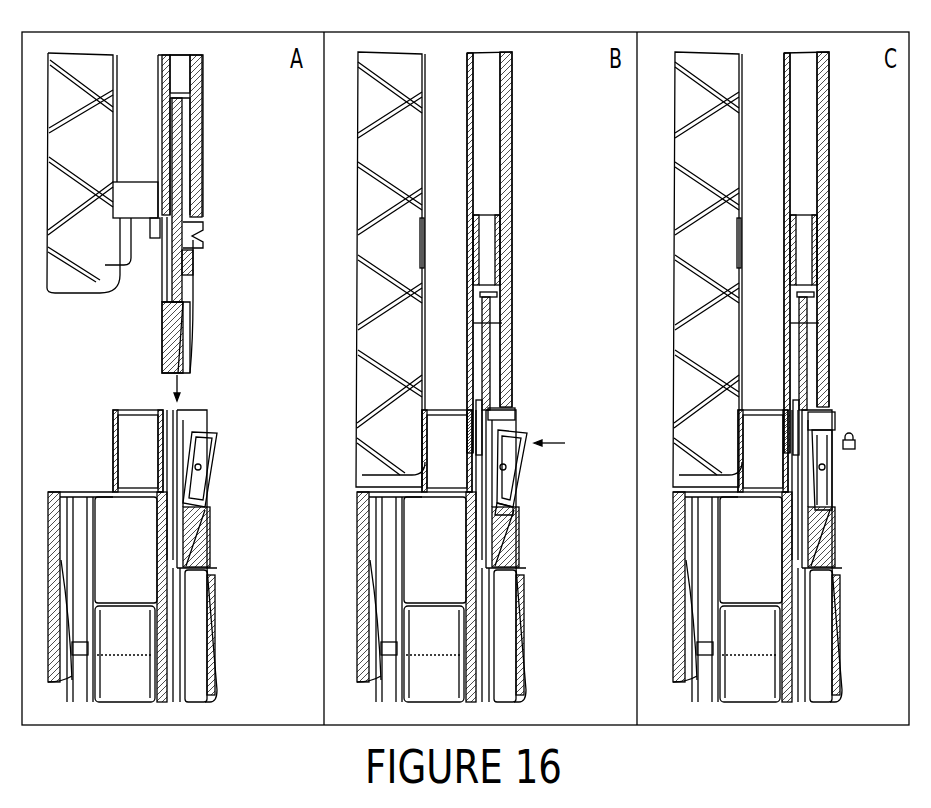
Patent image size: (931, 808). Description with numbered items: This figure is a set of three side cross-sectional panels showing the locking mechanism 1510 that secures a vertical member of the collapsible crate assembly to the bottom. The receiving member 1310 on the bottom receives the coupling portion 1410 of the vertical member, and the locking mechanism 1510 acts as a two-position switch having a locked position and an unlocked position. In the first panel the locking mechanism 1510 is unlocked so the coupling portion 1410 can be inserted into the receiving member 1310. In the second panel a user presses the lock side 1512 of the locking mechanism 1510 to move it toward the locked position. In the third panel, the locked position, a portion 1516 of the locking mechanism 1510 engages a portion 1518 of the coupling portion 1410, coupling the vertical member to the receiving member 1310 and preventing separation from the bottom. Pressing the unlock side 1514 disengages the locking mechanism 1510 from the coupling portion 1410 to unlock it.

The receiving member 1310 is at (160, 412).
The coupling portion 1410 is at (190, 325).
The portion of the coupling portion 1518 is at (196, 241).
The locking mechanism 1510 is at (210, 470).
The portion of the locking mechanism 1516 is at (528, 432).
The lock side 1512 is at (528, 447).
The unlock side 1514 is at (518, 488).